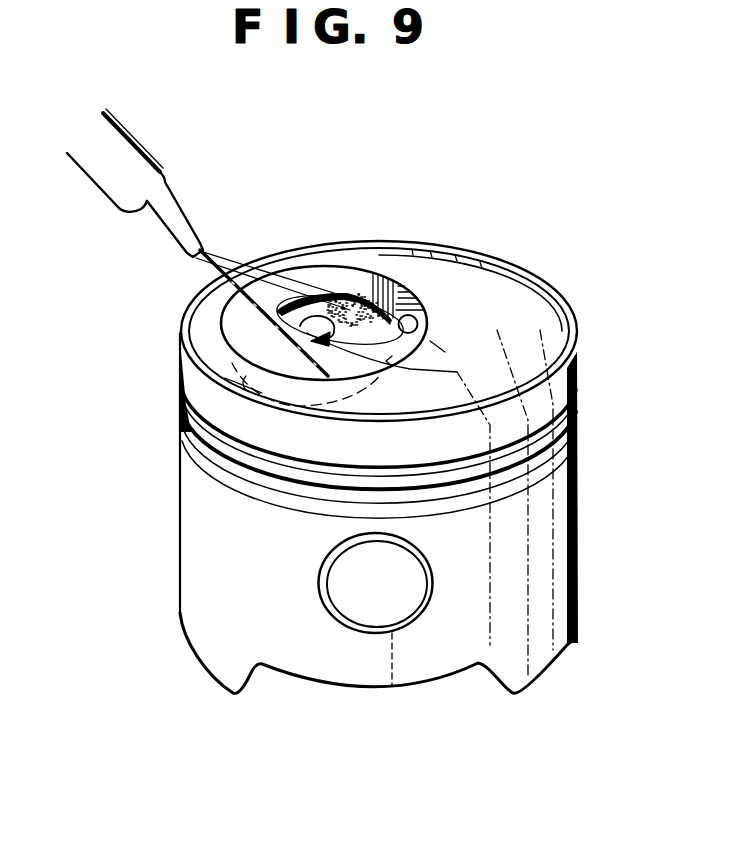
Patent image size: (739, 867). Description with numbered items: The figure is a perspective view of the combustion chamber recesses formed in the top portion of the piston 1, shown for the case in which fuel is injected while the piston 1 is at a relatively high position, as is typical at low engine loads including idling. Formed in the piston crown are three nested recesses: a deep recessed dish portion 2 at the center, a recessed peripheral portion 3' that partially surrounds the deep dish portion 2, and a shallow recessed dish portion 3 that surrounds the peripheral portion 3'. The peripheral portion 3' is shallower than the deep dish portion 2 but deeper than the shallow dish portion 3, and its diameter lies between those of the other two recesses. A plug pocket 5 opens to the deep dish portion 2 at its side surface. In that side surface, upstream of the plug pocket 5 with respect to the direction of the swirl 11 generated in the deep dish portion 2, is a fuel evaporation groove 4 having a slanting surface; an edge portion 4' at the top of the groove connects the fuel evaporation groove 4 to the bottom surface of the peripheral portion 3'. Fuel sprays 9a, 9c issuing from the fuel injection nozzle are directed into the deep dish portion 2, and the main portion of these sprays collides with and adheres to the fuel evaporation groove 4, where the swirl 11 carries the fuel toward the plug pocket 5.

The piston 1 is at (204, 565).
The deep recessed dish portion 2 is at (250, 338).
The shallow recessed dish portion 3 is at (379, 302).
The recessed peripheral portion 3' is at (348, 235).
The fuel evaporation groove 4 is at (330, 226).
The edge portion 4' is at (353, 206).
The plug pocket 5 is at (402, 312).
The swirl 11 is at (390, 361).
The fuel spray 9a is at (233, 268).
The fuel spray 9c is at (213, 267).